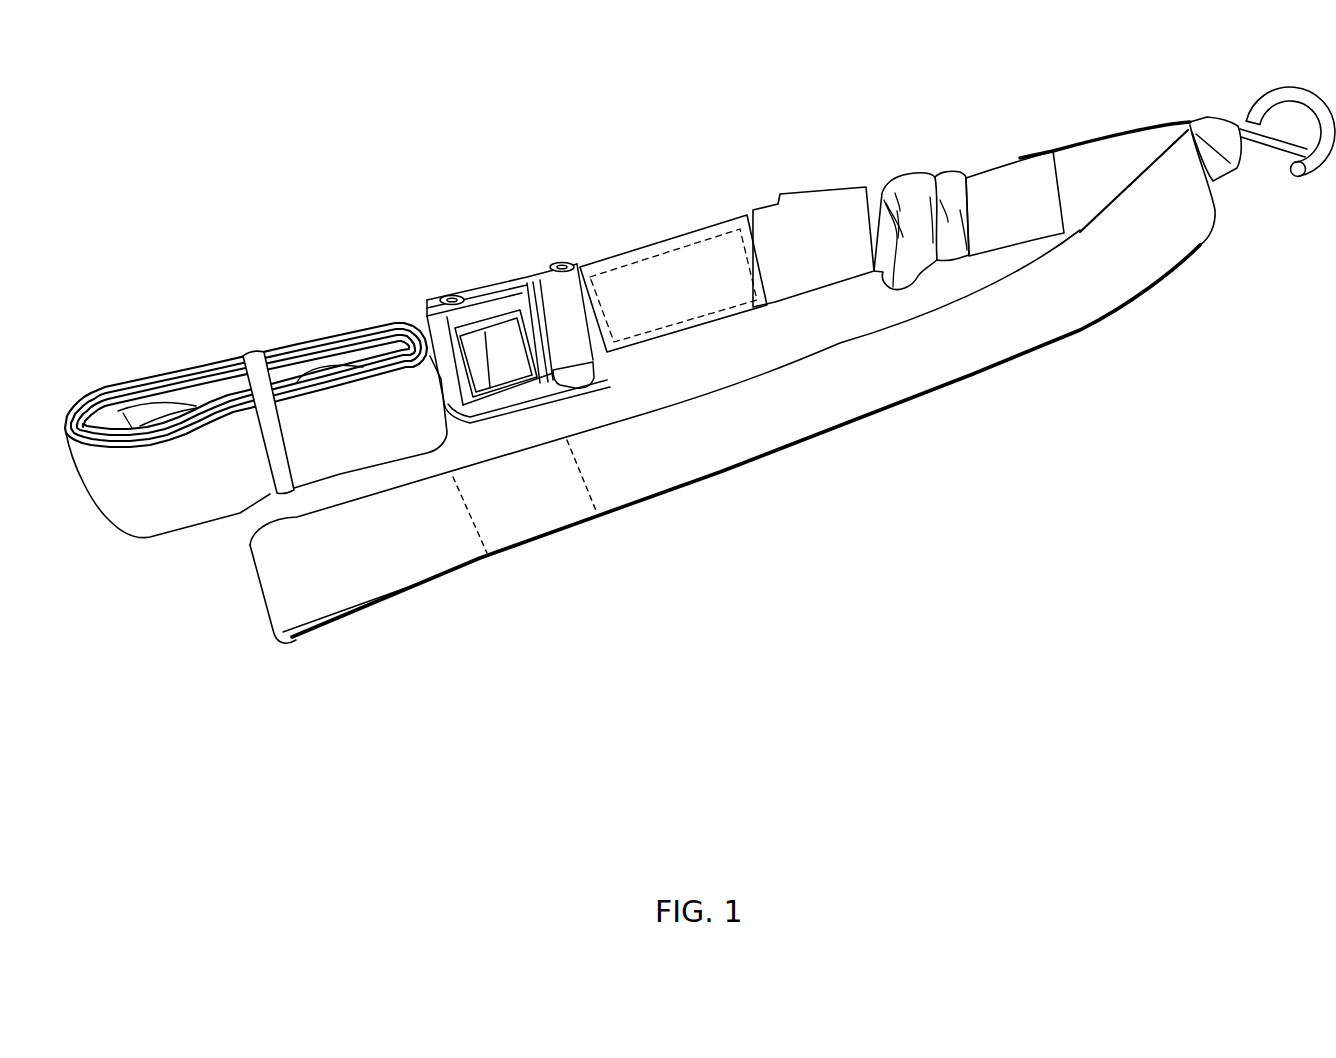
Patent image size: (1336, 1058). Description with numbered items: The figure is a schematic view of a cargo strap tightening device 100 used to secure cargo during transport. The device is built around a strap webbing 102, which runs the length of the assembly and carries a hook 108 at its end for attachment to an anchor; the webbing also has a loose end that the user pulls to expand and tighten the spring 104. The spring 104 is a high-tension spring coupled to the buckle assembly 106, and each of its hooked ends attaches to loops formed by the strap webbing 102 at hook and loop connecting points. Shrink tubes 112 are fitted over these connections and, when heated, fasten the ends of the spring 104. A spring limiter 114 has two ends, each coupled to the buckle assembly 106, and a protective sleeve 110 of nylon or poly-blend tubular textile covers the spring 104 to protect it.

The cargo strap tightening device 100 is at (207, 210).
The strap webbing 102 is at (975, 378).
The spring 104 is at (962, 177).
The buckle assembly 106 is at (523, 279).
The hook 108 is at (1268, 102).
The protective sleeve 110 is at (889, 183).
The shrink tube 112 is at (1001, 177).
The spring limiter 114 is at (795, 189).